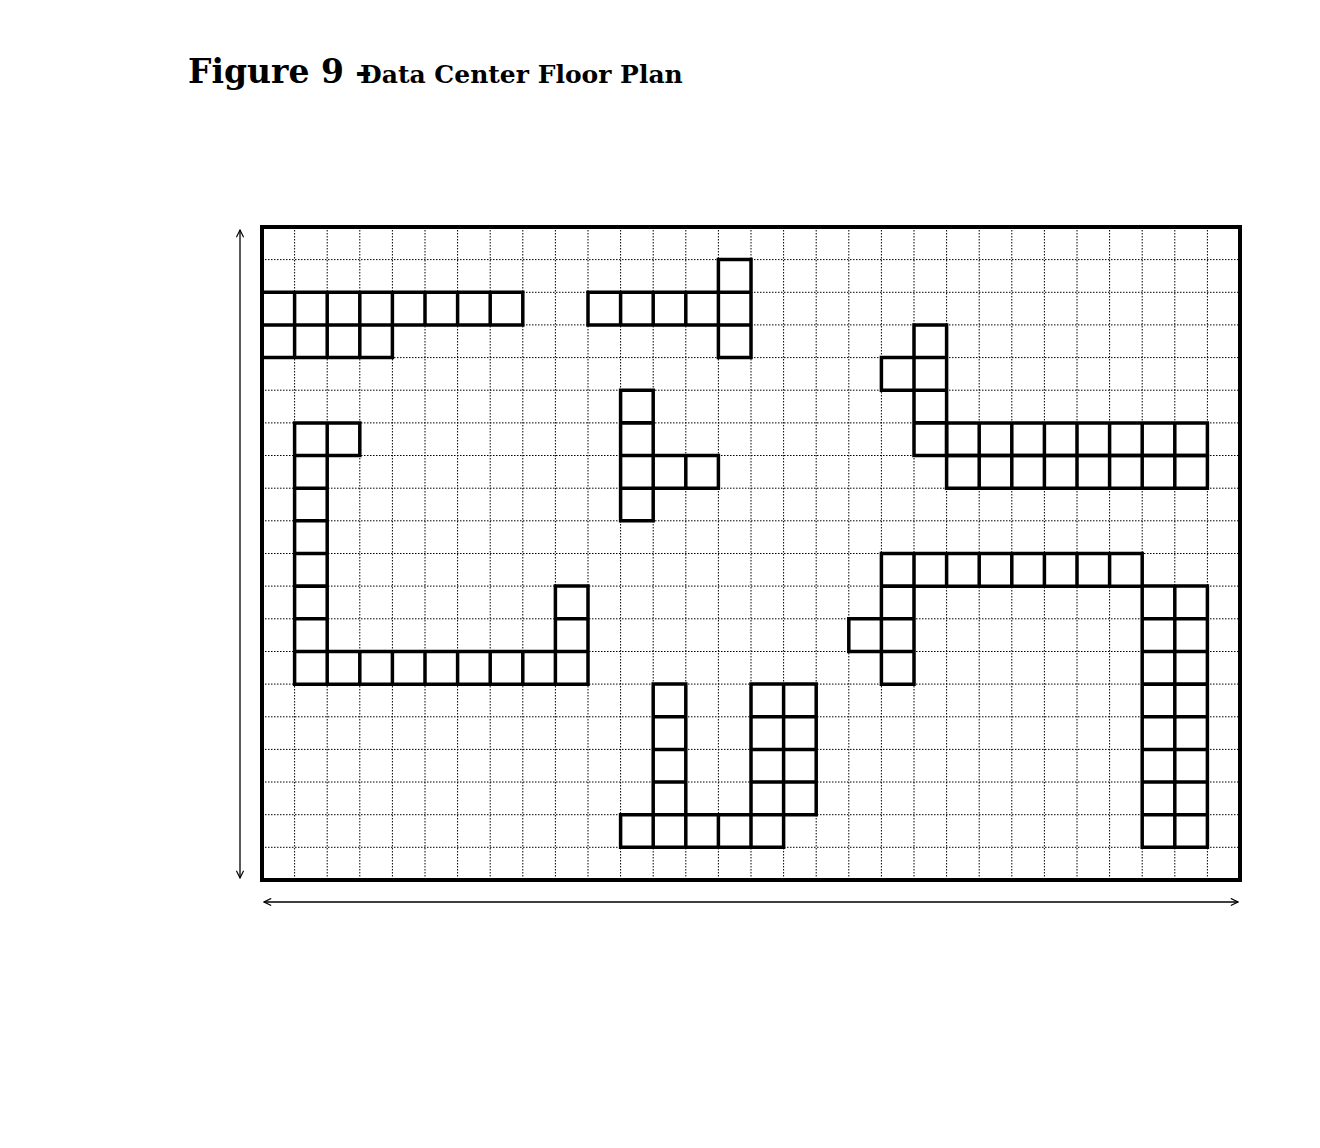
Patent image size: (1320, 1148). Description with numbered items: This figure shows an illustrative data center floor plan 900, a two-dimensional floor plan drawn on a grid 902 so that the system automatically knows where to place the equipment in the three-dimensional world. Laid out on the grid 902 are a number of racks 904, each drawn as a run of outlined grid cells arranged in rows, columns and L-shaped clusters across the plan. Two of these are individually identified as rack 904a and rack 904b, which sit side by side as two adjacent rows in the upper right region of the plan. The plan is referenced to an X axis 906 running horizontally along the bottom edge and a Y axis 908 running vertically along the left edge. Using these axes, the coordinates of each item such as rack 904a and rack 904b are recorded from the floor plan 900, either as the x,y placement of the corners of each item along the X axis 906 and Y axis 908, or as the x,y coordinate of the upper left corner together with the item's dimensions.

The floor plan 900 is at (838, 113).
The grid 902 is at (923, 290).
The racks 904 is at (635, 292).
The rack 904a is at (995, 420).
The rack 904b is at (1062, 420).
The X axis 906 is at (751, 927).
The Y axis 908 is at (193, 554).